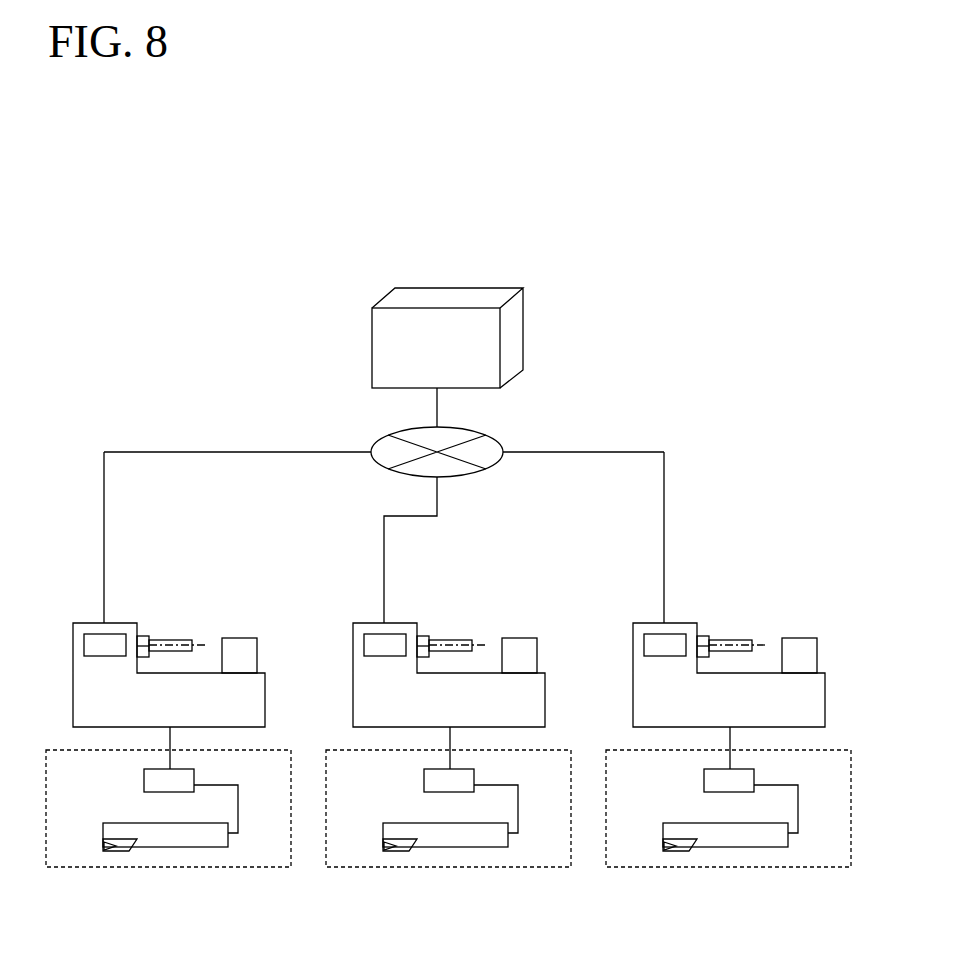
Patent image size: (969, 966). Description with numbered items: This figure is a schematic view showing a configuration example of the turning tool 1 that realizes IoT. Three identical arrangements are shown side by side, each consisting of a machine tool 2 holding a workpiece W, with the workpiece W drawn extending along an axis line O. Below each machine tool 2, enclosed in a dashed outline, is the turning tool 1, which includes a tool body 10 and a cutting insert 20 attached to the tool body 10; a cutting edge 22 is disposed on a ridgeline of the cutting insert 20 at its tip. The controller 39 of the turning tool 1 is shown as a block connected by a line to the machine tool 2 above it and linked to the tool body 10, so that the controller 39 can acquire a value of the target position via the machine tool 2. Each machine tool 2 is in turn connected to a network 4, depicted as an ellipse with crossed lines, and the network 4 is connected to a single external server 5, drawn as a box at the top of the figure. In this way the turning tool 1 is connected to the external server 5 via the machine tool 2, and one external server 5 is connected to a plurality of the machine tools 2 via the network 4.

The turning tool 1 is at (212, 874).
The machine tool 2 is at (124, 618).
The network 4 is at (499, 432).
The external server 5 is at (529, 283).
The tool body 10 is at (131, 823).
The cutting insert 20 is at (128, 845).
The cutting edge 22 is at (105, 852).
The controller 39 is at (144, 778).
The workpiece W is at (169, 640).
The axis line O is at (203, 642).